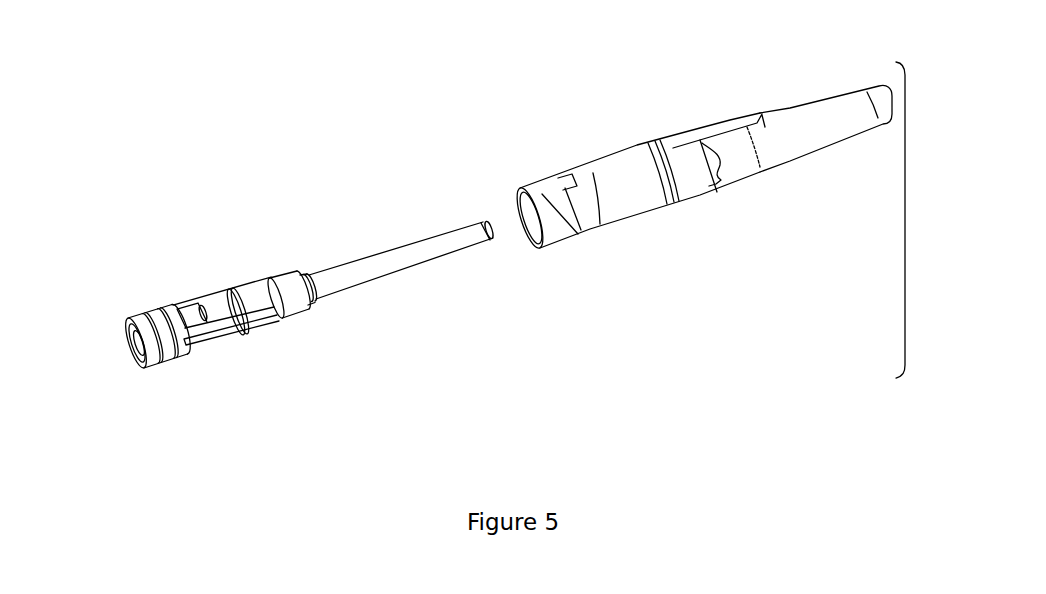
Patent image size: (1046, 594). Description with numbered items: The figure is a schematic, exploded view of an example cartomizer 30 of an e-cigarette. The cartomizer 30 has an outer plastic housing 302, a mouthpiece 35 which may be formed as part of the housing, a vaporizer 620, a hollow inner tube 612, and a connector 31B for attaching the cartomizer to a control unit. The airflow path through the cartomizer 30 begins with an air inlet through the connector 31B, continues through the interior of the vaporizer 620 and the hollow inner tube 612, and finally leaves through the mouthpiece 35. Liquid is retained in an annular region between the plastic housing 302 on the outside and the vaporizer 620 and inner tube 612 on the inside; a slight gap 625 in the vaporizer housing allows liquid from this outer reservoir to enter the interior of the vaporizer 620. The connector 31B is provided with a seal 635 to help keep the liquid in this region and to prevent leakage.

The cartomizer 30 is at (501, 242).
The mouthpiece 35 is at (857, 86).
The outer plastic housing 302 is at (702, 212).
The hollow inner tube 612 is at (337, 286).
The vaporizer 620 is at (250, 272).
The gap 625 is at (223, 321).
The seal 635 is at (127, 365).
The connector 31B is at (120, 348).